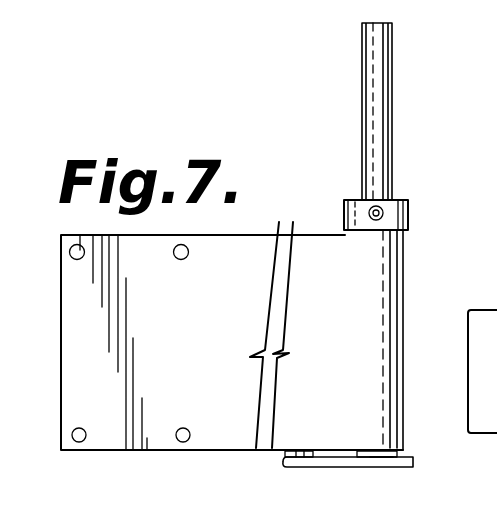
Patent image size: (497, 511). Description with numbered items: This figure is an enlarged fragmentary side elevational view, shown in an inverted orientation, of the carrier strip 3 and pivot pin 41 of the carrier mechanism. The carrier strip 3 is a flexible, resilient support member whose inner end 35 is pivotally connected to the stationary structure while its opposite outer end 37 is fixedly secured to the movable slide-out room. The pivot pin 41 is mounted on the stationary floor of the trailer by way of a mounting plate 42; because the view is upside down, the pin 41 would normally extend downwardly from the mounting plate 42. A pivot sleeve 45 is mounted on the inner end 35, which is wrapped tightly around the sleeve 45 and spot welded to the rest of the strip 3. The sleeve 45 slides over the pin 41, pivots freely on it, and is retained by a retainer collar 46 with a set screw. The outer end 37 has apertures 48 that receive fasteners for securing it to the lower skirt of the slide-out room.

The carrier strip 3 is at (238, 444).
The inner end 35 is at (316, 433).
The outer end 37 is at (77, 387).
The pivot pin 41 is at (393, 123).
The mounting plate 42 is at (414, 463).
The pivot sleeve 45 is at (372, 453).
The retainer collar 46 is at (410, 217).
The apertures 48 is at (68, 262).